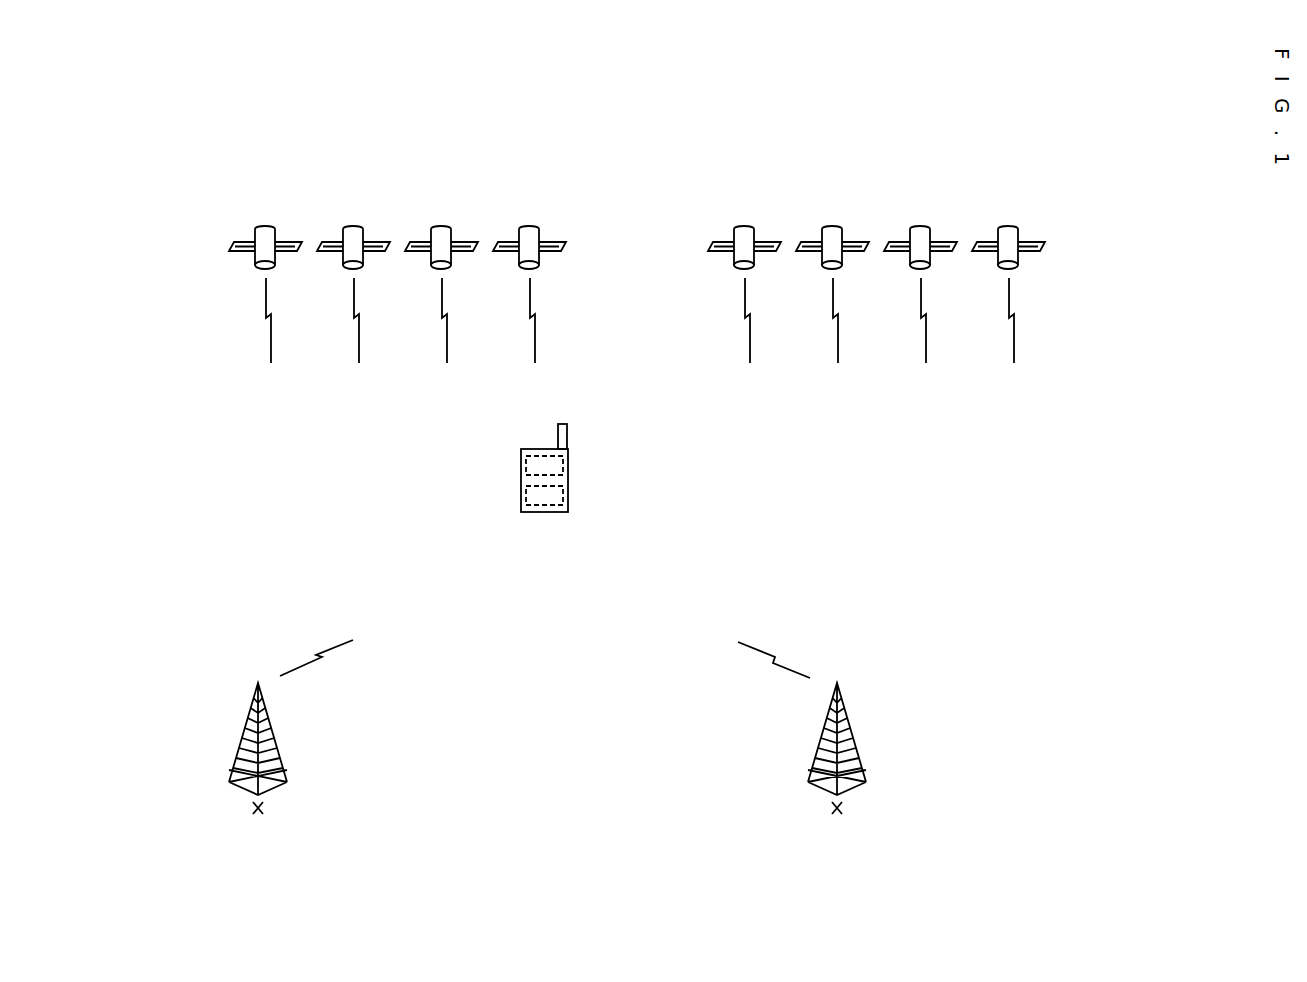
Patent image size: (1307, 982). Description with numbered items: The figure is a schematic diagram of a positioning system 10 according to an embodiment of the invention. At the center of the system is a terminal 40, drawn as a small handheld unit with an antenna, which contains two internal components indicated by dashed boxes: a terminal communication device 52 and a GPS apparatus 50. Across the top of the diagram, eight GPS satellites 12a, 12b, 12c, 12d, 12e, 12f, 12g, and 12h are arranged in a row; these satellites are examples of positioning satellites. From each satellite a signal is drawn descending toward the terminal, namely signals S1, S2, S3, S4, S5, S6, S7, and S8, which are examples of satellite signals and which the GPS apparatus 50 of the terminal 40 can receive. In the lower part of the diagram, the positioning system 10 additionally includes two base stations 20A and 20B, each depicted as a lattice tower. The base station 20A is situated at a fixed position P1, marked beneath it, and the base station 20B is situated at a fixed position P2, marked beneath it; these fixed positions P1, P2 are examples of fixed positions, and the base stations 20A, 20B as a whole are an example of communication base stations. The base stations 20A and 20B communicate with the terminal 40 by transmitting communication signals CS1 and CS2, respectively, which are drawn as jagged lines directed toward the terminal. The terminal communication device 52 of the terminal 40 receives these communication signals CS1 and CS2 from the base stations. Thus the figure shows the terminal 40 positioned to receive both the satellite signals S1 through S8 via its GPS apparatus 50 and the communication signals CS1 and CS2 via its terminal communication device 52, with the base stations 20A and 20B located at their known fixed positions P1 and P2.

The positioning system 10 is at (1028, 139).
The GPS satellite 12a is at (272, 203).
The GPS satellite 12b is at (354, 228).
The GPS satellite 12c is at (442, 228).
The GPS satellite 12d is at (530, 228).
The GPS satellite 12e is at (745, 228).
The GPS satellite 12f is at (833, 228).
The GPS satellite 12g is at (921, 228).
The GPS satellite 12h is at (1009, 228).
The signal S1 is at (266, 306).
The signal S2 is at (354, 306).
The signal S3 is at (442, 306).
The signal S4 is at (530, 306).
The signal S5 is at (745, 306).
The signal S6 is at (833, 306).
The signal S7 is at (921, 306).
The signal S8 is at (1009, 306).
The terminal 40 is at (548, 512).
The terminal communication device 52 is at (563, 461).
The GPS apparatus 50 is at (563, 500).
The communication signal CS1 is at (328, 642).
The communication signal CS2 is at (759, 651).
The base station 20A is at (258, 683).
The base station 20B is at (837, 683).
The fixed position P1 is at (258, 816).
The fixed position P2 is at (837, 816).